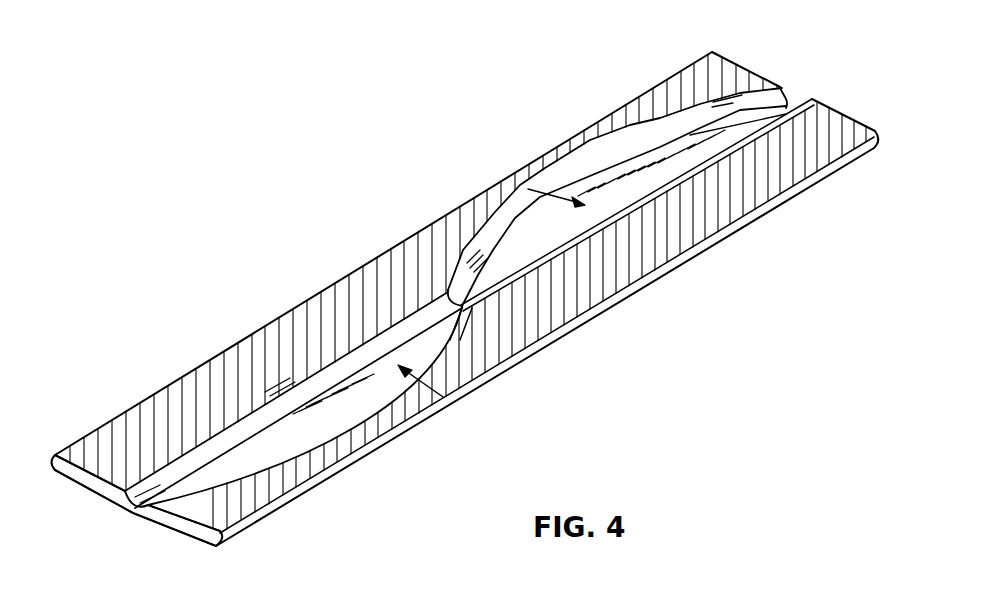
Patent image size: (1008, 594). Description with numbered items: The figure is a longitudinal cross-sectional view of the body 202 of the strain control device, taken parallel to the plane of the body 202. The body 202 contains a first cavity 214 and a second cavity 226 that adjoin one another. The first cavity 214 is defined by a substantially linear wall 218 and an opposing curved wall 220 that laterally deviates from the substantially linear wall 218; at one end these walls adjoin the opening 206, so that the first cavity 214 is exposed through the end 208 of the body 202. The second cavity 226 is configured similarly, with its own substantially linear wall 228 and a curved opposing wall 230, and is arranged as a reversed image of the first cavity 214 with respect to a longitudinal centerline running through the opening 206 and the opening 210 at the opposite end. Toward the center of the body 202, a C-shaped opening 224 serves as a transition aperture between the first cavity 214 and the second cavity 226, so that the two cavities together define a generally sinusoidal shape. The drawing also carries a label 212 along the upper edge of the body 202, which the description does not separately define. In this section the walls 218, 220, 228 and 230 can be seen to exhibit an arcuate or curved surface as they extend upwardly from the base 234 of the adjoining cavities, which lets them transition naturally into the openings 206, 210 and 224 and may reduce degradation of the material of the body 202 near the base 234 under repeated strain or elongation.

The body 202 is at (461, 207).
The opening 206 is at (120, 499).
The end 208 is at (73, 486).
The opening 210 is at (785, 96).
The back top edge 212 is at (726, 55).
The first cavity 214 is at (458, 397).
The substantially linear wall 218 is at (245, 407).
The curved wall 220 is at (421, 397).
The C-shaped opening 224 is at (421, 306).
The second cavity 226 is at (543, 170).
The substantially linear wall 228 is at (677, 184).
The curved opposing wall 230 is at (588, 133).
The base 234 is at (298, 422).